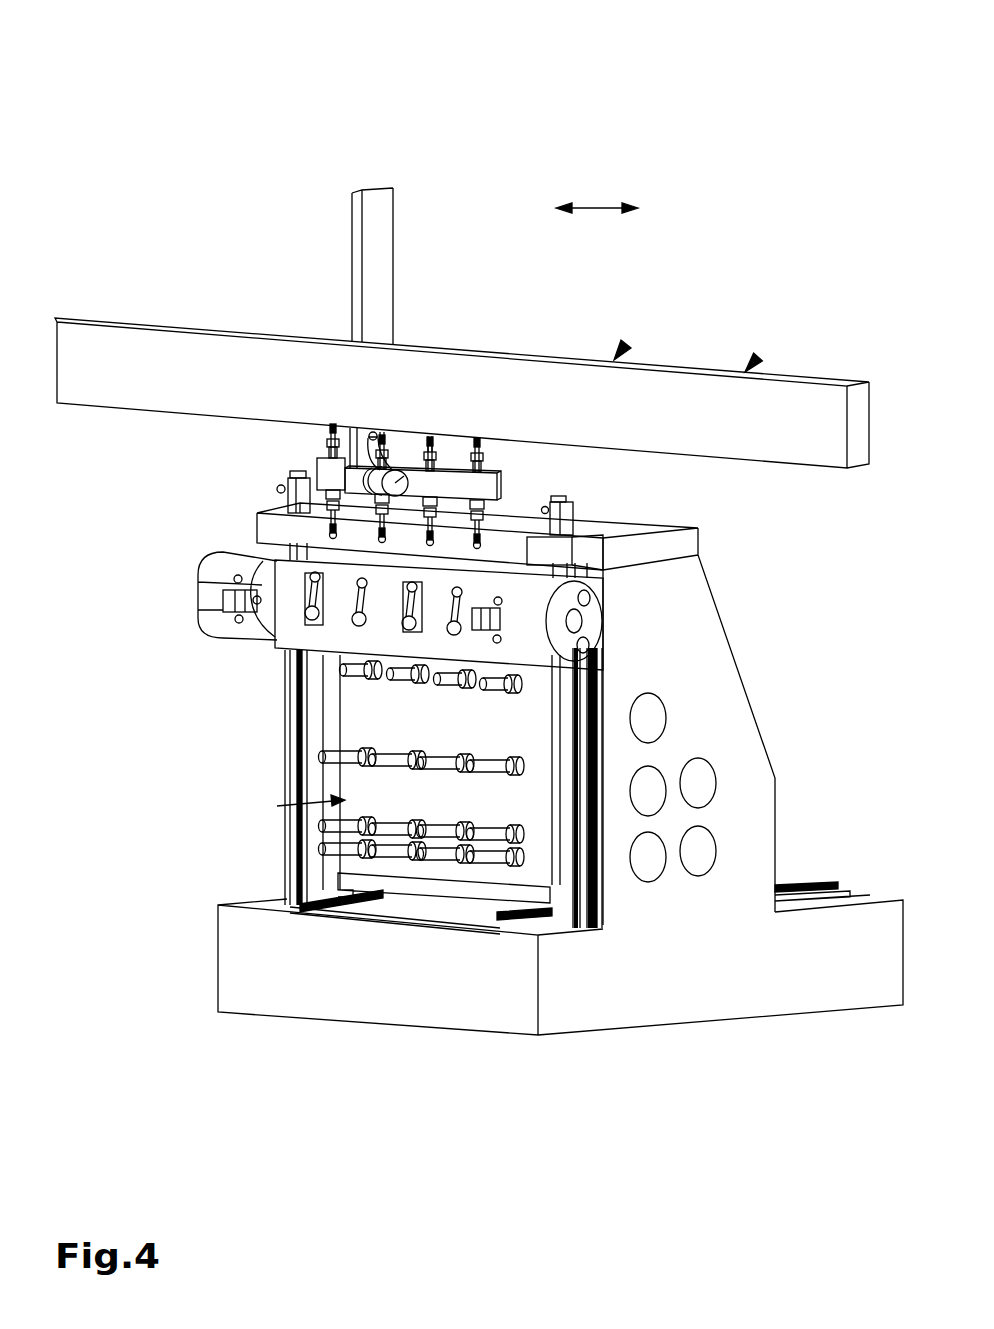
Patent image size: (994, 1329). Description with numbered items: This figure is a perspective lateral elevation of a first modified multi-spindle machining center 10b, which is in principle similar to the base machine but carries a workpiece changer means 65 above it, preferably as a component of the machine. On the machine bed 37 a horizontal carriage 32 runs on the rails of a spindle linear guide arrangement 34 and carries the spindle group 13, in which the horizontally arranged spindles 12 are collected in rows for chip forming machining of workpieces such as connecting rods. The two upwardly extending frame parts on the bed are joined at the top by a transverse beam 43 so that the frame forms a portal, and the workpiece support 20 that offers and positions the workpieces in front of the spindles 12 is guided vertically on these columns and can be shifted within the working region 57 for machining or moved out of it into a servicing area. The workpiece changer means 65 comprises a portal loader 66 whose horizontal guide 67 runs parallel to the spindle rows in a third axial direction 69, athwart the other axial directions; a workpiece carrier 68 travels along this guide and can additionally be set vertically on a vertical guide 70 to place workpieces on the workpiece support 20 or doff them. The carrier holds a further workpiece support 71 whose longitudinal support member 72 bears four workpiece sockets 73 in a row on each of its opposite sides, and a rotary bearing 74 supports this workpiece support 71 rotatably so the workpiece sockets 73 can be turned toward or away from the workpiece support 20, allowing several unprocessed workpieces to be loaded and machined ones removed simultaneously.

The multi-spindle machining center 10b is at (809, 165).
The spindles 12 is at (379, 763).
The spindle group 13 is at (444, 928).
The workpiece support 20 is at (400, 628).
The horizontal carriage 32 is at (421, 948).
The spindle linear guide arrangement 34 is at (835, 840).
The machine bed 37 is at (560, 989).
The transverse beam 43 is at (516, 697).
The working region 57 is at (285, 821).
The workpiece changer means 65 is at (659, 318).
The portal loader 66 is at (785, 335).
The horizontal guide 67 is at (462, 366).
The workpiece carrier 68 is at (423, 440).
The third axial direction 69 is at (601, 185).
The vertical guide 70 is at (406, 324).
The workpiece support 71 is at (290, 458).
The longitudinal support member 72 is at (454, 475).
The workpiece sockets 73 is at (443, 482).
The rotary bearing 74 is at (361, 438).